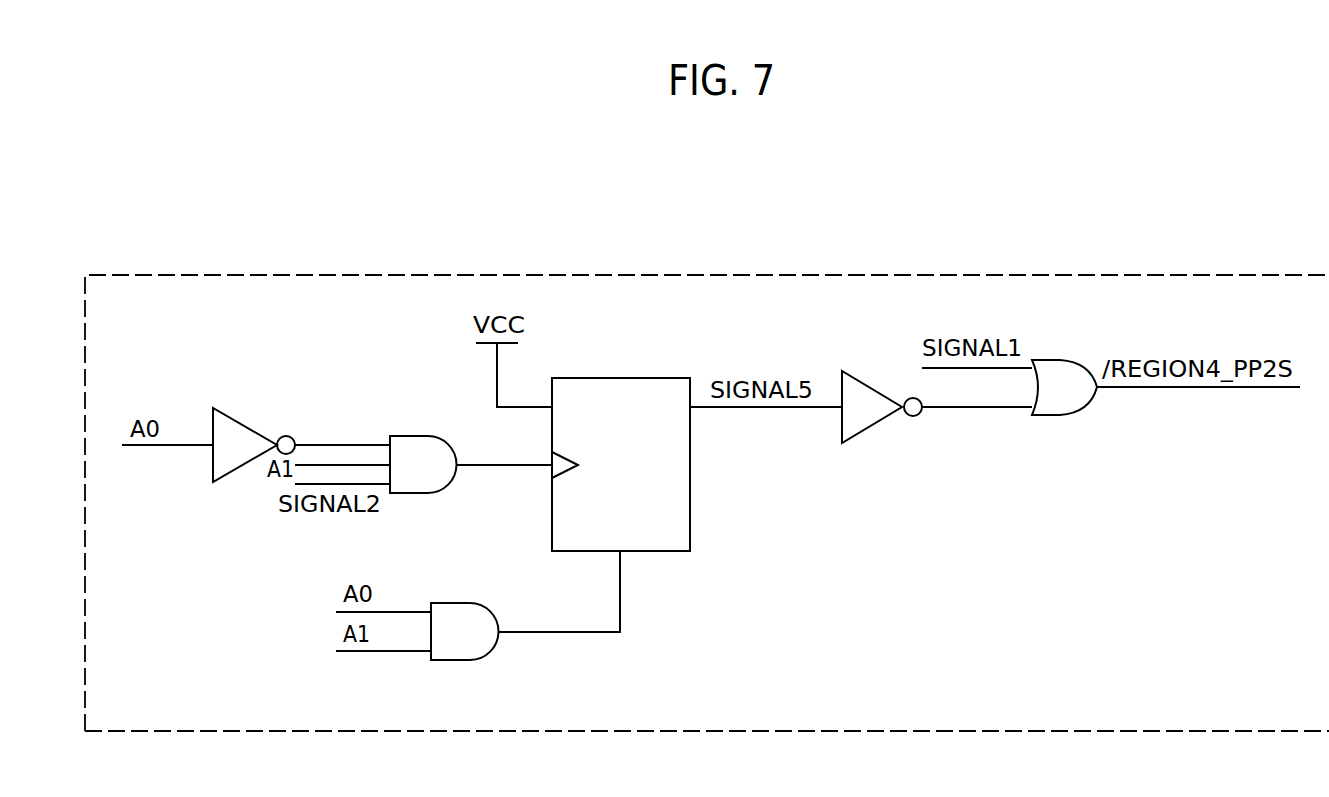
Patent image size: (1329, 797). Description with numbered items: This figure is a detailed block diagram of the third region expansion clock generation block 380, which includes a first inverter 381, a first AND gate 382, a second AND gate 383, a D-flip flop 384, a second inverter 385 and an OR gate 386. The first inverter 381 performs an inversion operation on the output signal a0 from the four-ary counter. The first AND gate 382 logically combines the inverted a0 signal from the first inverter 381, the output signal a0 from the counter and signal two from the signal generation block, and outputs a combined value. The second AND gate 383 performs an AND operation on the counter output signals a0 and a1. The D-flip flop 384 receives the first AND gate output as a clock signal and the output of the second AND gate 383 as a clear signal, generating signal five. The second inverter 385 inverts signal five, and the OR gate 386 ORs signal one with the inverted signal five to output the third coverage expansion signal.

The third region expansion clock generation block 380 is at (1157, 276).
The first inverter 381 is at (227, 408).
The first AND gate 382 is at (407, 436).
The second AND gate 383 is at (447, 603).
The D-flip flop 384 is at (622, 378).
The second inverter 385 is at (853, 443).
The OR gate 386 is at (1043, 415).